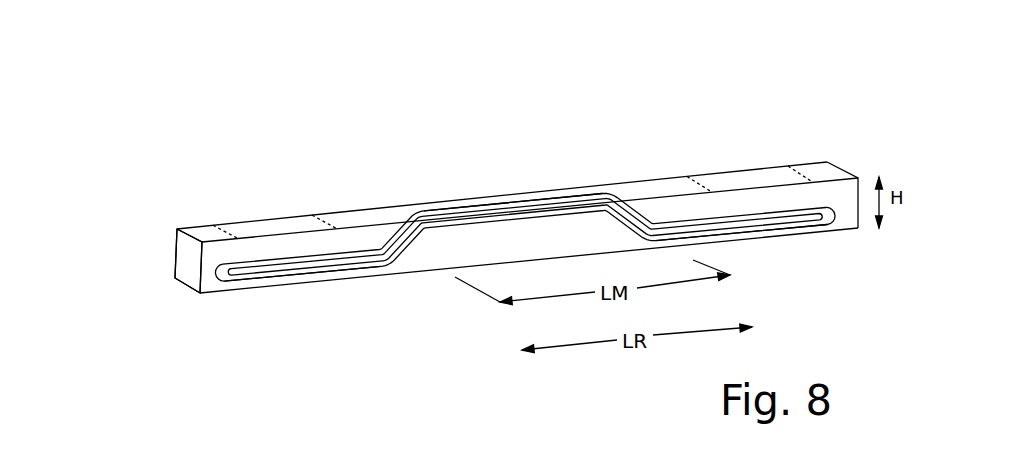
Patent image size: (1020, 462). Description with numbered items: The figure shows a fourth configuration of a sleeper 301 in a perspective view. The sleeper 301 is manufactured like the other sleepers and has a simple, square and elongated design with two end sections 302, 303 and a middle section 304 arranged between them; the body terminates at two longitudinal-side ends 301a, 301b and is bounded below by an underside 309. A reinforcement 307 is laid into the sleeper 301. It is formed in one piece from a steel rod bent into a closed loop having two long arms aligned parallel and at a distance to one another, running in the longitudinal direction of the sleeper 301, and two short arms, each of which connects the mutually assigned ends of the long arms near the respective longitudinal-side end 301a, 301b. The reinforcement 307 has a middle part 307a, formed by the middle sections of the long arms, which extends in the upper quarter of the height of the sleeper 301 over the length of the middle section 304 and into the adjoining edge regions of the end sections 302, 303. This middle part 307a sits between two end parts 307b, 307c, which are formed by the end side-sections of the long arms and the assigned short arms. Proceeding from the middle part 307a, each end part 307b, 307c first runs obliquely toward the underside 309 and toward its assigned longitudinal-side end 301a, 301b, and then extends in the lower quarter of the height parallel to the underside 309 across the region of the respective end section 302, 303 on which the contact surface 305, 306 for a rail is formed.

The sleeper 301 is at (295, 160).
The longitudinal-side end 301a is at (190, 260).
The longitudinal-side end 301b is at (862, 162).
The end section 302 is at (208, 225).
The end section 303 is at (827, 162).
The middle section 304 is at (622, 190).
The contact surface 305 is at (271, 229).
The contact surface 306 is at (748, 182).
The reinforcement 307 is at (419, 210).
The middle part 307a is at (493, 204).
The end part 307b is at (325, 265).
The end part 307c is at (790, 222).
The underside 309 is at (256, 300).